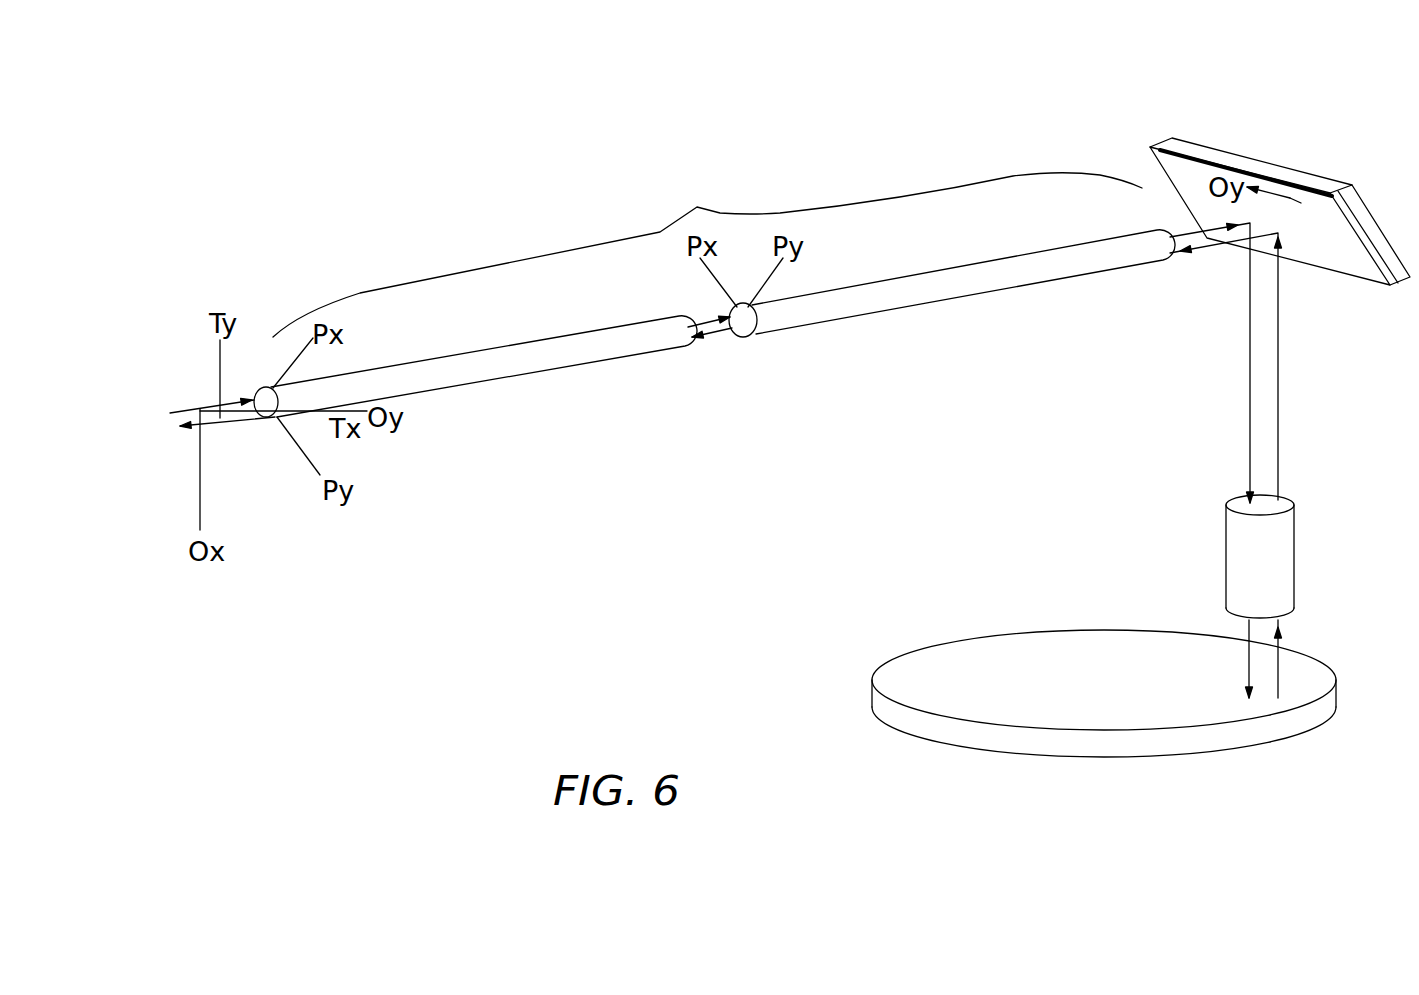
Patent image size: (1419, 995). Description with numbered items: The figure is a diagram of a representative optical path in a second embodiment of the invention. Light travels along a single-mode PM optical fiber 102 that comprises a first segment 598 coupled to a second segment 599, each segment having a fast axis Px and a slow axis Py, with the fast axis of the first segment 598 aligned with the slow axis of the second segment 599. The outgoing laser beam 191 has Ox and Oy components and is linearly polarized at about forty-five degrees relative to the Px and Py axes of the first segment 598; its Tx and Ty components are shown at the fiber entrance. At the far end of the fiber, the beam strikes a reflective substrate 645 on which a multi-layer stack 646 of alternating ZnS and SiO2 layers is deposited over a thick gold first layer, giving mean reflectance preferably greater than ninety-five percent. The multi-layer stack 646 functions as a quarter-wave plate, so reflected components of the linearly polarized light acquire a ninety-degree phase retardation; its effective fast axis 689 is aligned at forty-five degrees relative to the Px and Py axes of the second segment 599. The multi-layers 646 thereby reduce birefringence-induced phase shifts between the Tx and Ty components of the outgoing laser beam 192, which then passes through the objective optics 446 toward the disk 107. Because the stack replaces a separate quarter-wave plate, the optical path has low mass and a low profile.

The single-mode PM optical fiber 102 is at (698, 295).
The rotary table platform 107 is at (913, 682).
The outgoing laser beam 191 is at (178, 410).
The outgoing laser beam 192 is at (198, 428).
The objective optics 446 is at (1235, 572).
The first segment 598 is at (482, 380).
The second segment 599 is at (882, 303).
The reflective substrate 645 is at (1230, 150).
The multi-layer stack 646 is at (1160, 142).
The effective fast axis 689 is at (1290, 198).